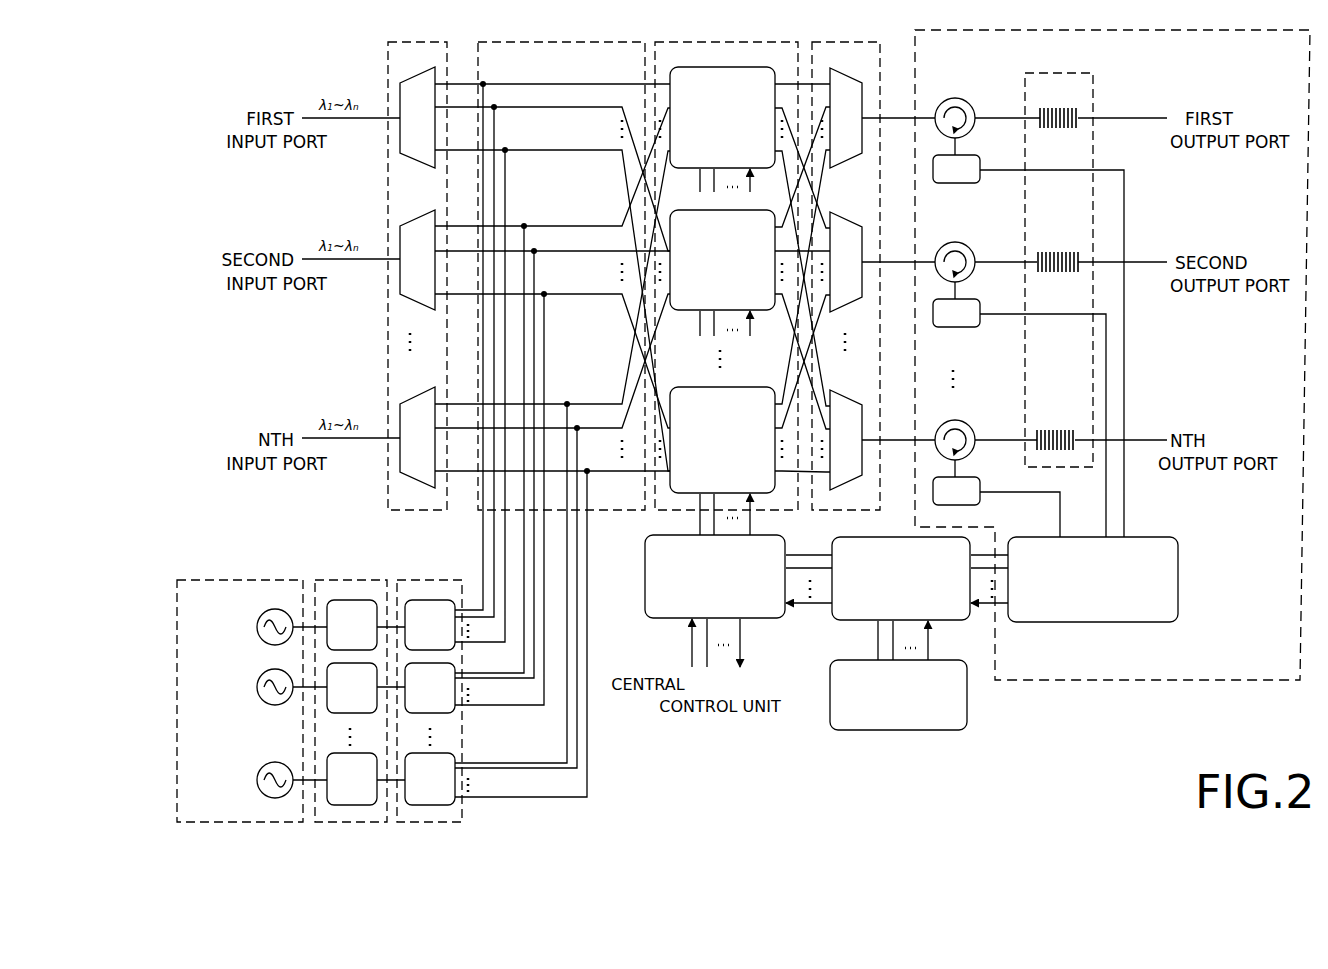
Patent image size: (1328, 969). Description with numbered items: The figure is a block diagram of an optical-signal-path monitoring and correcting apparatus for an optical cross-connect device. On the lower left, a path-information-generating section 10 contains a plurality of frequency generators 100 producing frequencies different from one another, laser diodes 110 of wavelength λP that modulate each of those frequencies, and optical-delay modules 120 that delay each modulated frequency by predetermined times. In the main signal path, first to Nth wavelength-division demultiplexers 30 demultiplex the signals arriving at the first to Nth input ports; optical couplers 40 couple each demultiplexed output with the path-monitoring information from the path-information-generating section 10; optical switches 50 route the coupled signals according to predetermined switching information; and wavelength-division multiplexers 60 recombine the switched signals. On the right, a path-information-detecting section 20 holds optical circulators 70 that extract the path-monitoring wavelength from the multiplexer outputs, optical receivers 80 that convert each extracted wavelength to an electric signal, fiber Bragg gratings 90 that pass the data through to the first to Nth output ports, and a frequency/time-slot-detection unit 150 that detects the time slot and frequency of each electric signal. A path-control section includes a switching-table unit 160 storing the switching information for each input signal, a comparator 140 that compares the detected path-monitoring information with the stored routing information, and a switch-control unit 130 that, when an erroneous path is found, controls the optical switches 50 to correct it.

The path-information-generating section 10 is at (329, 708).
The path-information-detecting section 20 is at (1108, 30).
The wavelength-division demultiplexers 30 is at (428, 42).
The optical couplers 40 is at (550, 42).
The optical switches 50 is at (732, 42).
The wavelength-division multiplexers 60 is at (852, 42).
The optical circulators 70 is at (968, 101).
The optical receivers 80 is at (958, 183).
The fiber Bragg gratings 90 is at (1060, 73).
The frequency generators 100 is at (247, 580).
The laser diodes 110 is at (350, 580).
The optical-delay modules 120 is at (430, 580).
The switch-control unit 130 is at (665, 618).
The comparator 140 is at (940, 620).
The frequency/time-slot-detection unit 150 is at (1120, 622).
The switching-table unit 160 is at (930, 730).